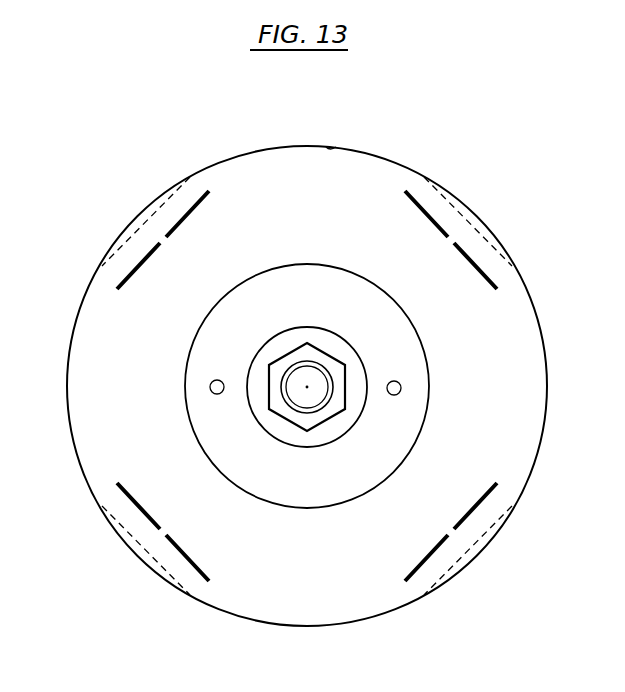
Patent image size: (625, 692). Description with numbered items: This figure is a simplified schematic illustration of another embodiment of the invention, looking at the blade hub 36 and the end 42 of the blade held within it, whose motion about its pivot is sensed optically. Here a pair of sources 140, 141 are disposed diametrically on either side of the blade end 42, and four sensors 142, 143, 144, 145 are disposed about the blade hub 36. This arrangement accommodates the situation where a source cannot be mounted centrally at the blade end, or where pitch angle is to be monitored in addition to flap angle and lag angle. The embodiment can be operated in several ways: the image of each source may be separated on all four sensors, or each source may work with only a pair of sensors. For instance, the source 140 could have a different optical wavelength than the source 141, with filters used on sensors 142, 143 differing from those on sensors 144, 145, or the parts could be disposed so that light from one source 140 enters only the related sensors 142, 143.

The hub arm 36 is at (347, 145).
The blade end 42 is at (318, 497).
The source 140 is at (226, 367).
The source 141 is at (396, 381).
The sensor 142 is at (107, 275).
The sensor 143 is at (110, 485).
The sensor 144 is at (507, 493).
The sensor 145 is at (508, 282).